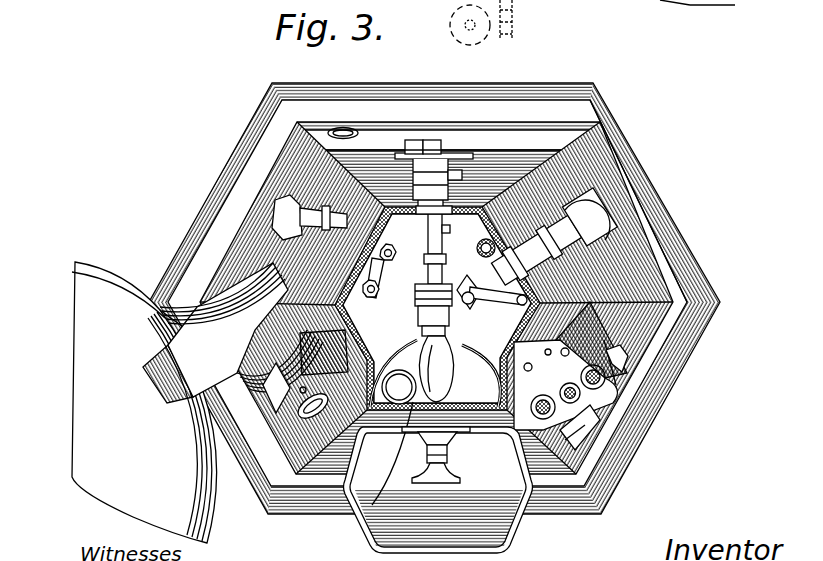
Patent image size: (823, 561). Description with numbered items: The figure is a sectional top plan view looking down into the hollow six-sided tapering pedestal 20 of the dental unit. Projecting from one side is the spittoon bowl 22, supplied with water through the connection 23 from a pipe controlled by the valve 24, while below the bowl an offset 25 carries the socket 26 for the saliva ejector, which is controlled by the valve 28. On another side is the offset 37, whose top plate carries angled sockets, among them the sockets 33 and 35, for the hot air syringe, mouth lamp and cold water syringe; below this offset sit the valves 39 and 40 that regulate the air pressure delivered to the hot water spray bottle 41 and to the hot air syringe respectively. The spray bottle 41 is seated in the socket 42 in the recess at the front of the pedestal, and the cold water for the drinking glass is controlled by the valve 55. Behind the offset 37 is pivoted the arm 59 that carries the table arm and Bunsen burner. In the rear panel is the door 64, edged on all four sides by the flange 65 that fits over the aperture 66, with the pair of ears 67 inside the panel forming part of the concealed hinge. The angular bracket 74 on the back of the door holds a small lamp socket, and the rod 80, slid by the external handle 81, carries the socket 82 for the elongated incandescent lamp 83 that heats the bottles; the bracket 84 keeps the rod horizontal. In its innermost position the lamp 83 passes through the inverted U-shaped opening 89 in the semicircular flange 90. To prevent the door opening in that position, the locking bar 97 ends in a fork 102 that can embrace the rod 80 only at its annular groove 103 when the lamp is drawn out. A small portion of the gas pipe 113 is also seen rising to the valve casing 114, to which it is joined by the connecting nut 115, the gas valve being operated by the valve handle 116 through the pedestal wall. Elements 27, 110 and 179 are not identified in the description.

The pedestal 20 is at (667, 286).
The spittoon bowl 22 is at (84, 268).
The water connection 23 is at (157, 357).
The valve 24 is at (280, 215).
The offset 25 is at (283, 402).
The socket 26 is at (272, 412).
The cylinder 27 is at (303, 420).
The valve 28 is at (255, 370).
The socket 33 is at (570, 366).
The socket 35 is at (569, 353).
The offset 37 is at (605, 340).
The valve 39 is at (620, 477).
The valve 40 is at (625, 357).
The hot water spray bottle 41 is at (410, 402).
The socket 42 is at (421, 454).
The valve 55 is at (447, 482).
The arm 59 is at (545, 225).
The door 64 is at (460, 176).
The flange 65 is at (497, 153).
The aperture 66 is at (386, 246).
The ears 67 is at (410, 180).
The angular bracket 74 is at (385, 270).
The rod 80 is at (444, 245).
The handle 81 is at (444, 165).
The socket 82 is at (416, 305).
The incandescent lamp 83 is at (455, 380).
The bracket 84 is at (378, 289).
The opening 89 is at (400, 370).
The flange 90 is at (472, 312).
The locking bar 97 is at (405, 262).
The fork 102 is at (480, 242).
The annular groove 103 is at (446, 262).
The valve cap 110 is at (420, 158).
The gas pipe 113 is at (510, 306).
The valve casing 114 is at (492, 302).
The connecting nut 115 is at (466, 306).
The valve handle 116 is at (552, 258).
The rim 179 is at (594, 110).